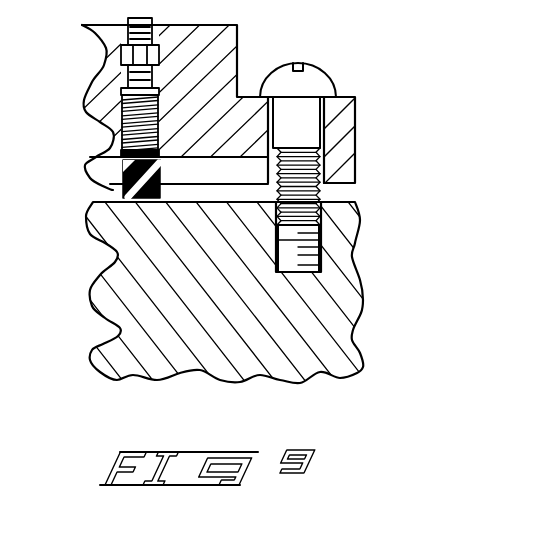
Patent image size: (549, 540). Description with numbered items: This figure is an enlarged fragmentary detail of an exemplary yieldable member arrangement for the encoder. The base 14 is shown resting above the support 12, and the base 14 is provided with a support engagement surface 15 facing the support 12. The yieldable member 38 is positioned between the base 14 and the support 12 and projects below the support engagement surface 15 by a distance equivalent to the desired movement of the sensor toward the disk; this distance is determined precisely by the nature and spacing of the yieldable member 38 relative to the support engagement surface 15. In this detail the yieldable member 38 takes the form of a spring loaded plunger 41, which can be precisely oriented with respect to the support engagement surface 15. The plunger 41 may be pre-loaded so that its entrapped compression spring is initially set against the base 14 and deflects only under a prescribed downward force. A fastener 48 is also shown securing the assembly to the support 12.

The support 12 is at (337, 300).
The base 14 is at (360, 140).
The support engagement surface 15 is at (180, 187).
The yieldable member 38 is at (130, 206).
The spring loaded plunger 41 is at (86, 110).
The screw 48 is at (310, 57).